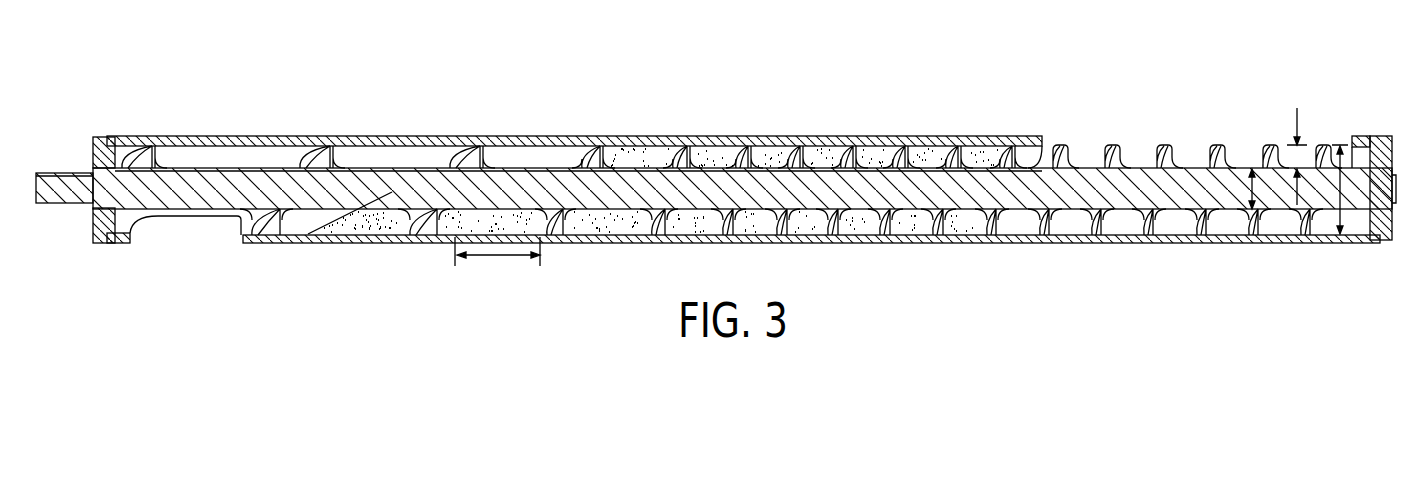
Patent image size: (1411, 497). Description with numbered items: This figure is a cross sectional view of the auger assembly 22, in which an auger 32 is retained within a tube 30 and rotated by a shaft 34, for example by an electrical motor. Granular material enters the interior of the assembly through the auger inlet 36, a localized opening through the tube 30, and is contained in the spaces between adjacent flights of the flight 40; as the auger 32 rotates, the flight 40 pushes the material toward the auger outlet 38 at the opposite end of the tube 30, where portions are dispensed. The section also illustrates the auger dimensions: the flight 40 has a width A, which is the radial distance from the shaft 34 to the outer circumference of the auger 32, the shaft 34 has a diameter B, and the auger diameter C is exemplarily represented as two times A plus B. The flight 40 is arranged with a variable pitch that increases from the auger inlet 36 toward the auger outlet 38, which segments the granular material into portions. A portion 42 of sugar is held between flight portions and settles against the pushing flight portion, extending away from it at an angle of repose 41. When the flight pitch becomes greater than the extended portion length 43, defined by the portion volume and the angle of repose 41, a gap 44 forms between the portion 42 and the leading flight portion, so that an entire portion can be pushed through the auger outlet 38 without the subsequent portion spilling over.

The auger assembly 22 is at (838, 101).
The tube 30 is at (678, 137).
The auger 32 is at (624, 188).
The shaft 34 is at (63, 183).
The auger inlet 36 is at (1238, 144).
The auger outlet 38 is at (190, 236).
The flight 40 is at (484, 158).
The angle of repose 41 is at (352, 233).
The portion 42 is at (984, 163).
The extended portion length 43 is at (497, 258).
The gap 44 is at (438, 215).
The flight width A is at (1297, 122).
The shaft diameter B is at (1250, 188).
The auger diameter C is at (1338, 190).